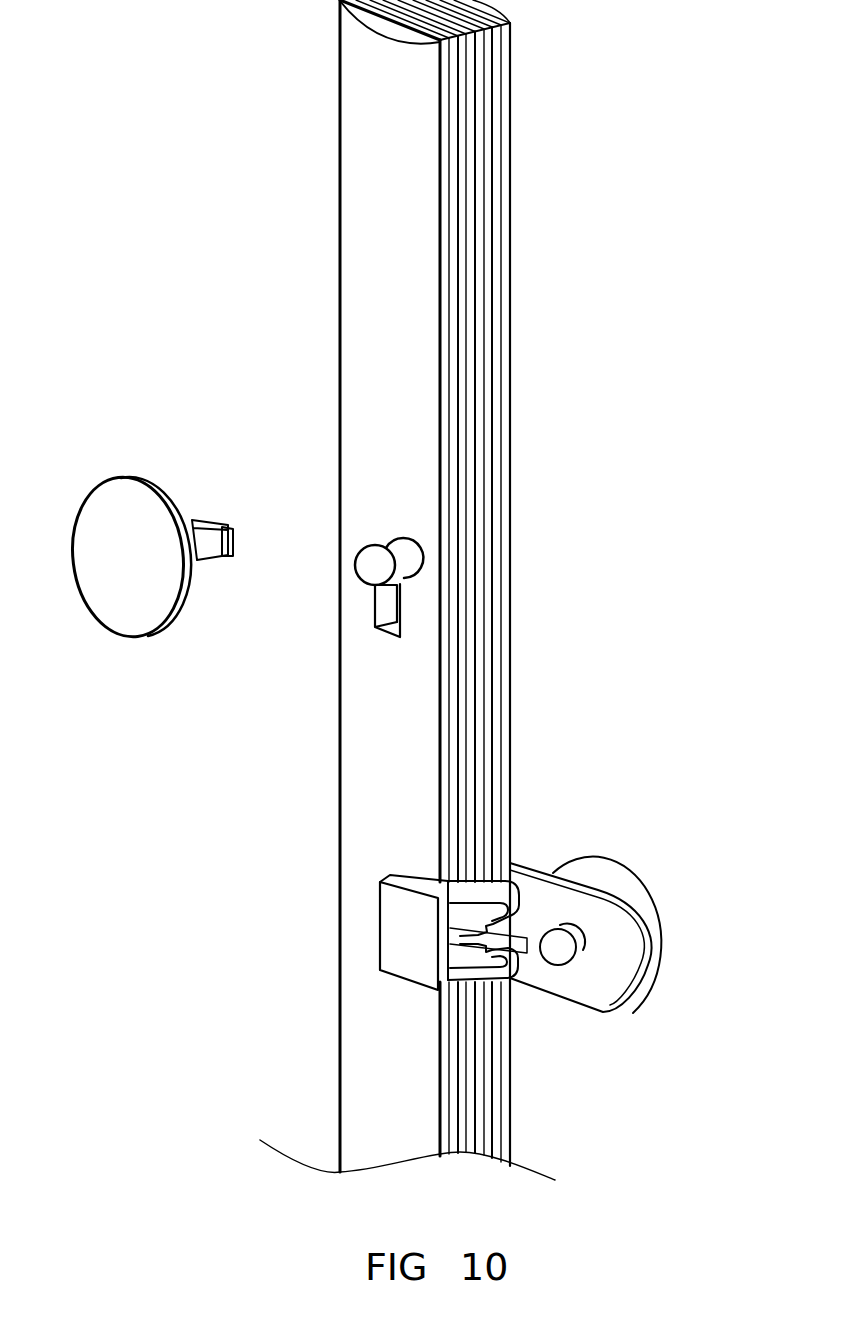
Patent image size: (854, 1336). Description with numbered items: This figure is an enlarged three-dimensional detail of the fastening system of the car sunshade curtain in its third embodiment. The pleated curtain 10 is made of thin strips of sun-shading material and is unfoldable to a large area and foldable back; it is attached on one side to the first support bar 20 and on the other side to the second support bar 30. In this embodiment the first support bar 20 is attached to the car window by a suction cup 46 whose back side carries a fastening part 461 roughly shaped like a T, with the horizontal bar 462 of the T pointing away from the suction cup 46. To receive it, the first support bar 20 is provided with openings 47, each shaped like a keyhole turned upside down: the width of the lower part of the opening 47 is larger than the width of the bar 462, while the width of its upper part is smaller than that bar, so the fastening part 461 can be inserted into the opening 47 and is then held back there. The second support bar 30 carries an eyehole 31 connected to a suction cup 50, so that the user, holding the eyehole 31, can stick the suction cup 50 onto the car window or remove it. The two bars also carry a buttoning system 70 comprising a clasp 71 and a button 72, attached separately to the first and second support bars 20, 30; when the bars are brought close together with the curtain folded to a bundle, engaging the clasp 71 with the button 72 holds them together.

The pleated curtain 10 is at (476, 458).
The first support bar 20 is at (356, 219).
The second support bar 30 is at (512, 237).
The opening 47 is at (377, 550).
The suction cup 46 is at (128, 597).
The fastening part 461 is at (205, 548).
The horizontal bar 462 is at (233, 545).
The buttoning system 70 is at (308, 946).
The clasp 71 is at (397, 913).
The button 72 is at (523, 930).
The suction cup 50 is at (657, 900).
The eyehole 31 is at (585, 957).